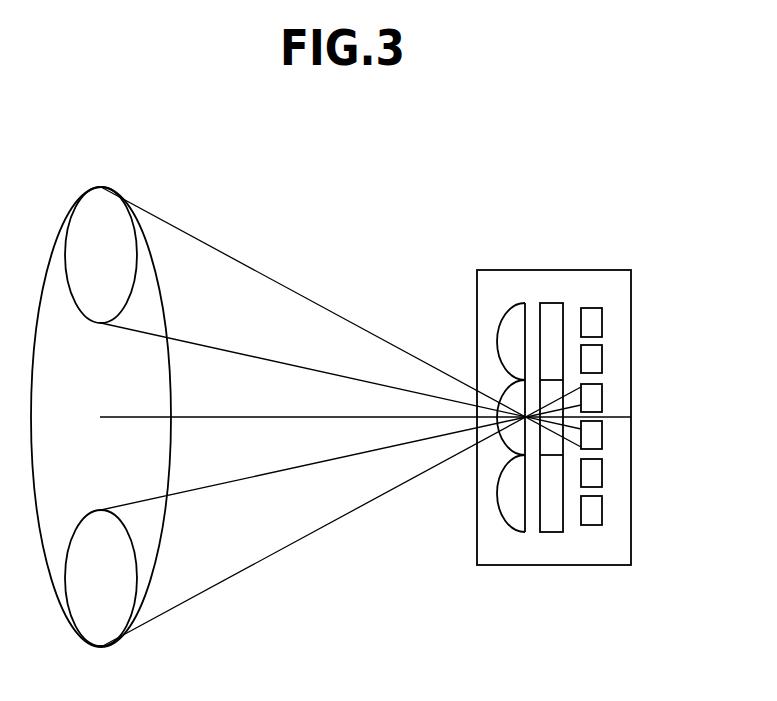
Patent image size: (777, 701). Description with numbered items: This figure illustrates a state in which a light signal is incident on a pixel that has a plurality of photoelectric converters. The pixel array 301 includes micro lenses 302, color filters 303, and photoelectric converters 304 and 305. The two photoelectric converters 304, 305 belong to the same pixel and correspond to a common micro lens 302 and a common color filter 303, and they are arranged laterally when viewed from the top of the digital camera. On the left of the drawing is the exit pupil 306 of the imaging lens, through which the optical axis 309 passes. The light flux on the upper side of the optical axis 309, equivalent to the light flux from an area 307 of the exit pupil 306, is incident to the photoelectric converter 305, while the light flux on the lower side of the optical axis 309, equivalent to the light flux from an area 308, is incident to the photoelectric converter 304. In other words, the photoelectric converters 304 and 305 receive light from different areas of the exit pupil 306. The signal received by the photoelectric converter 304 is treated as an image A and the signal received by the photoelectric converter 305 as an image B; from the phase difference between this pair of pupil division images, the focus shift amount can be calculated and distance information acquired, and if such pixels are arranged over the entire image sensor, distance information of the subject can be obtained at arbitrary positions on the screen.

The pixel array 301 is at (631, 297).
The micro lens 302 is at (513, 303).
The color filter 303 is at (555, 303).
The photoelectric converter 304 is at (602, 394).
The photoelectric converter 305 is at (602, 431).
The exit pupil 306 is at (165, 302).
The area 307 is at (101, 187).
The area 308 is at (128, 528).
The optical axis 309 is at (228, 417).